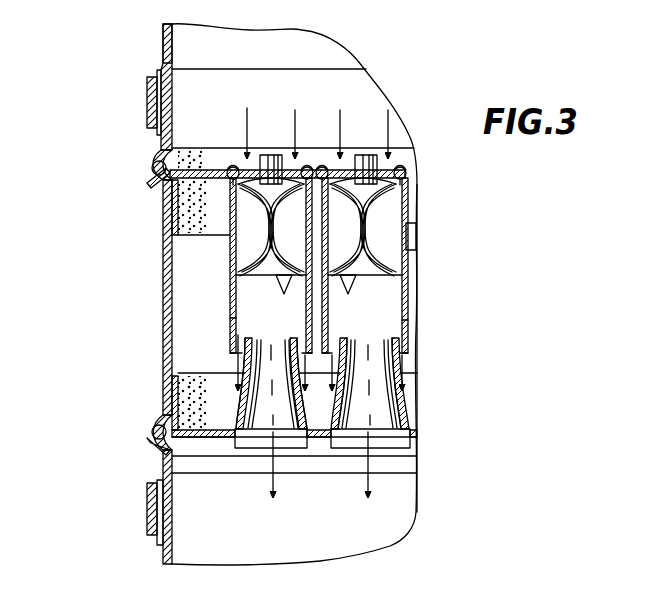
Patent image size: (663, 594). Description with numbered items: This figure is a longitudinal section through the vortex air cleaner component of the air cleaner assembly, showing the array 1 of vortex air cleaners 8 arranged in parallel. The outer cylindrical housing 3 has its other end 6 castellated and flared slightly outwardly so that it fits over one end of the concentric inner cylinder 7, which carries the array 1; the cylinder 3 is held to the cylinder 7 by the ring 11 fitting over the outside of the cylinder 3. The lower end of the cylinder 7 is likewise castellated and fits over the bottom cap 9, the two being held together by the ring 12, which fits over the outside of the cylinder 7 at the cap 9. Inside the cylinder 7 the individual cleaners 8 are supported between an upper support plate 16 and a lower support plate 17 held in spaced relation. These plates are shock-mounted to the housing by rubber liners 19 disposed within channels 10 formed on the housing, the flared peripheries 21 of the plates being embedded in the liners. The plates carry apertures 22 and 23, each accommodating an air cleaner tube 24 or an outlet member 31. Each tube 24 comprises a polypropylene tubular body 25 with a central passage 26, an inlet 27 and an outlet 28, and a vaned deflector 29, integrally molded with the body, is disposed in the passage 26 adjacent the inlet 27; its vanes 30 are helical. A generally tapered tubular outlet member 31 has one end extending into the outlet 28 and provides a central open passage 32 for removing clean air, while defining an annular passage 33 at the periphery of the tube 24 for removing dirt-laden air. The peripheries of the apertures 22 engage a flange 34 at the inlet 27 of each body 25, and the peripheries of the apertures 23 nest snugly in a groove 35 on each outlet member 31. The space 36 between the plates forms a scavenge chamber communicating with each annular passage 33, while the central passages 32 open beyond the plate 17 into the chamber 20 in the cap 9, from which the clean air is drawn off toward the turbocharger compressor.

The array of vortex air cleaners 1 is at (384, 116).
The cylindrical housing 3 is at (158, 38).
The other end of the cylinder 6 is at (160, 130).
The inner cylinder 7 is at (166, 290).
The vortex air cleaner 8 is at (418, 298).
The bottom cap 9 is at (165, 548).
The channel 10 is at (156, 170).
The ring 11 is at (147, 97).
The ring 12 is at (150, 510).
The support plate 16 is at (206, 160).
The support plate 17 is at (212, 438).
The rubber liner 19 is at (180, 232).
The chamber 20 is at (327, 535).
The periphery of the plate 21 is at (166, 184).
The aperture 22 is at (303, 168).
The aperture 23 is at (392, 440).
The air cleaner tube 24 is at (232, 262).
The tubular body 25 is at (408, 246).
The central passage 26 is at (272, 325).
The inlet 27 is at (262, 166).
The outlet 28 is at (232, 318).
The vaned deflector 29 is at (232, 208).
The vane 30 is at (263, 230).
The outlet member 31 is at (243, 402).
The central open passage 32 is at (292, 388).
The annular passage 33 is at (232, 356).
The flange 34 is at (235, 165).
The groove 35 is at (232, 438).
The space 36 is at (218, 299).